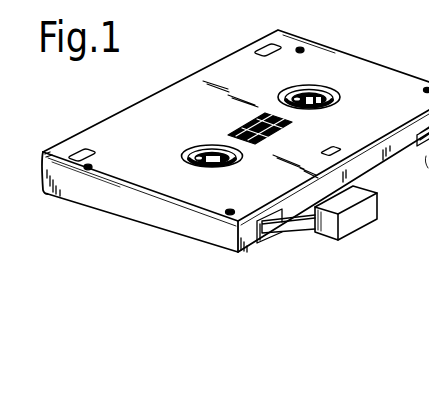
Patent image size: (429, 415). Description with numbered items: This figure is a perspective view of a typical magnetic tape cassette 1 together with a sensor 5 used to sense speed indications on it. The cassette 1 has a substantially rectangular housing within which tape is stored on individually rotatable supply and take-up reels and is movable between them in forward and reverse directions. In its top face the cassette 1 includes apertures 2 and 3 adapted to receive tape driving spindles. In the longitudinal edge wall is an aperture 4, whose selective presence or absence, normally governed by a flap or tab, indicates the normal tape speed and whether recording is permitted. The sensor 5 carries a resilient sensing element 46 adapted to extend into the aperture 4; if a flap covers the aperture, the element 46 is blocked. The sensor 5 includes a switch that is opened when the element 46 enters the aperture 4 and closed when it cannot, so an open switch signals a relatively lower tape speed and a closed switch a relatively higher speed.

The cassette 1 is at (343, 52).
The aperture 2 is at (182, 154).
The aperture 3 is at (340, 96).
The aperture 4 is at (270, 240).
The sensing element 46 is at (309, 227).
The sensor 5 is at (362, 221).